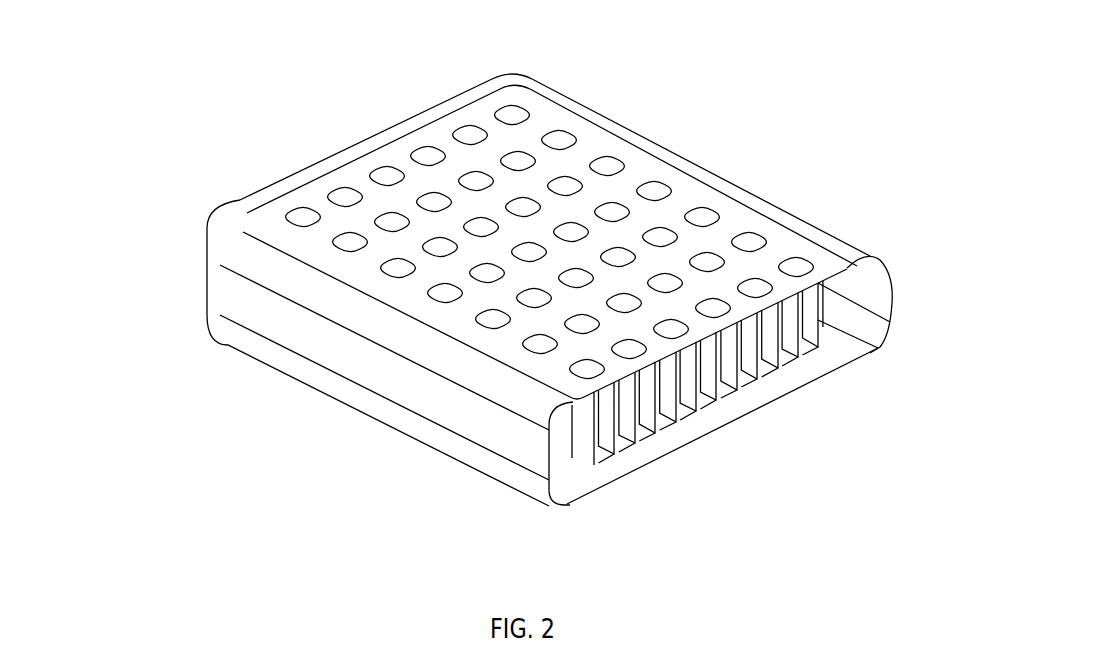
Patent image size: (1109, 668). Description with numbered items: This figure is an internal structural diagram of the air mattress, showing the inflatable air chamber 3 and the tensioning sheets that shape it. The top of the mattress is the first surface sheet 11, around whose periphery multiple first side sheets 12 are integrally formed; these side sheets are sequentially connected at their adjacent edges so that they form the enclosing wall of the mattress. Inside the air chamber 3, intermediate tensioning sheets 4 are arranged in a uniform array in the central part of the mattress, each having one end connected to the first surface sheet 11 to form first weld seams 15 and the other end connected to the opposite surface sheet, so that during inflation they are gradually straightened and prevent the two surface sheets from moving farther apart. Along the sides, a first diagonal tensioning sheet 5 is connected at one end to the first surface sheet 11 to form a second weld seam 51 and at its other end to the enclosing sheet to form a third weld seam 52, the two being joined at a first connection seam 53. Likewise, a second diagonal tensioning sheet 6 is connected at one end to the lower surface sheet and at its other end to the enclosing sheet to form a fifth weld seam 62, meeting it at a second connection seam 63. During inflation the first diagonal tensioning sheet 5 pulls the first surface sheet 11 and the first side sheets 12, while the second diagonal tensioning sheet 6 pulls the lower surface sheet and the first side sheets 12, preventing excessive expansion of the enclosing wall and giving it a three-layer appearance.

The first surface sheet 11 is at (652, 216).
The first weld seams 15 is at (569, 133).
The second weld seam 51 is at (646, 152).
The first side sheets 12 is at (523, 414).
The third weld seam 52 is at (366, 392).
The first connection seam 53 is at (394, 359).
The fifth weld seam 62 is at (308, 397).
The second connection seam 63 is at (262, 343).
The first diagonal tensioning sheet 5 is at (872, 270).
The second diagonal tensioning sheet 6 is at (880, 345).
The air chamber 3 is at (763, 397).
The intermediate tensioning sheets 4 is at (673, 417).